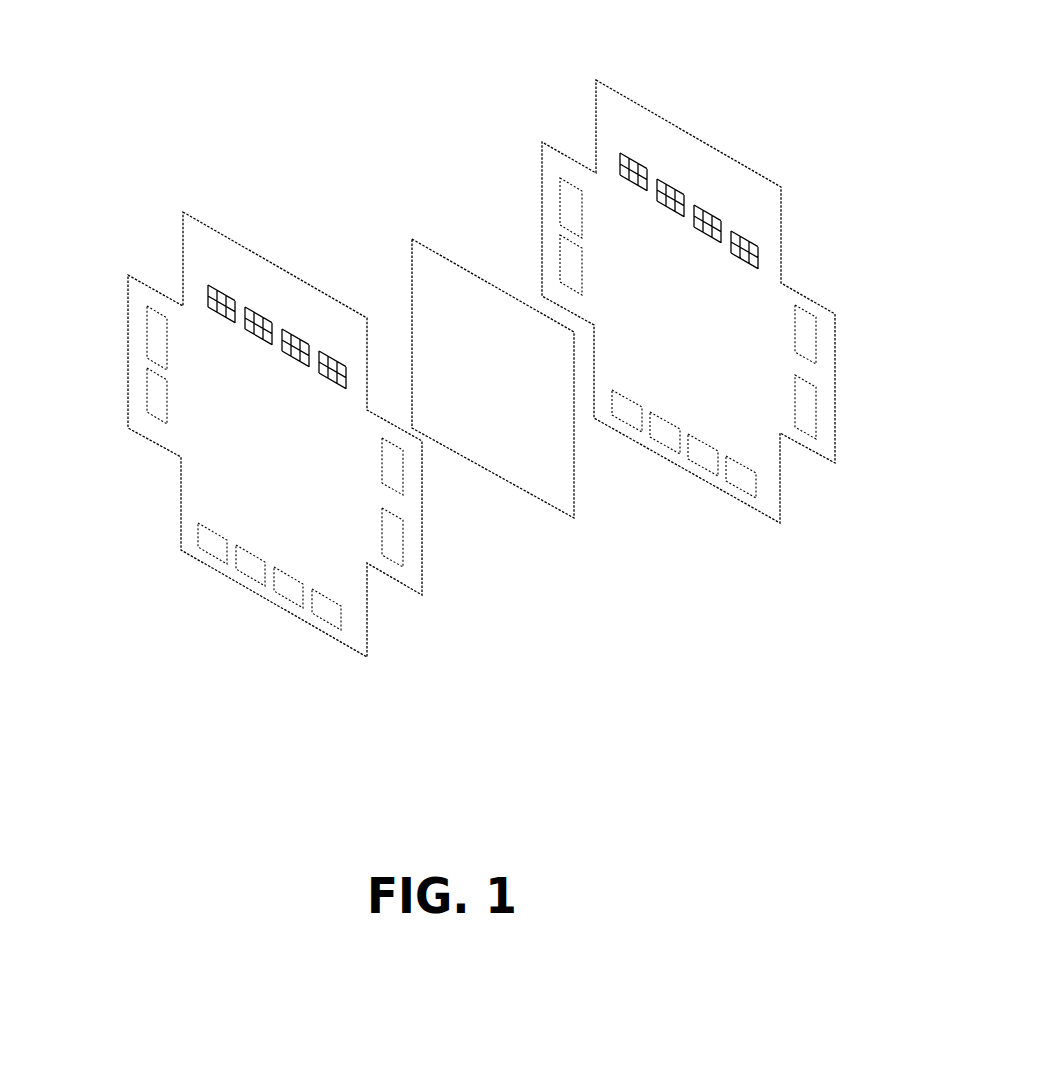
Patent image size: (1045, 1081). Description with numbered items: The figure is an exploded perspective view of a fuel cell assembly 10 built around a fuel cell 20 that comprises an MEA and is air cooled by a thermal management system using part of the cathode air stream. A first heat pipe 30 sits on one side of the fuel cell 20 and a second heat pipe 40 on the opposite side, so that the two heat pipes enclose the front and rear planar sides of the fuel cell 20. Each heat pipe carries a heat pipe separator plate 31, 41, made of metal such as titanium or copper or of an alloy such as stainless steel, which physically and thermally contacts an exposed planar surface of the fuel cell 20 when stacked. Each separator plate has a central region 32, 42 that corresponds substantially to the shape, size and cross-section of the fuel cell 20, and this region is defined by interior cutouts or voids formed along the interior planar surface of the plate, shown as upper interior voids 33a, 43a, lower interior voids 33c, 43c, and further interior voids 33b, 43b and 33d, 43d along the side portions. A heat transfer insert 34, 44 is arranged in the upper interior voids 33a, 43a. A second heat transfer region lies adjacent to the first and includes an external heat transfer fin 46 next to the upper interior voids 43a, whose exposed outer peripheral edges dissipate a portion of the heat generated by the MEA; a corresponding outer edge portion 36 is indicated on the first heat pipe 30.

The fuel cell assembly 10 is at (77, 97).
The fuel cell 20 is at (518, 462).
The first heat pipe 30 is at (367, 645).
The heat pipe separator plate 31 is at (198, 498).
The central region 32 is at (267, 453).
The upper interior voids 33a is at (296, 340).
The interior voids 33b is at (393, 463).
The lower interior voids 33c is at (288, 592).
The interior voids 33d is at (158, 337).
The heat transfer insert 34 is at (218, 302).
The edge portion of first circuit board 36 is at (213, 247).
The second heat pipe 40 is at (780, 508).
The heat pipe separator plate 41 is at (732, 290).
The central region 42 is at (695, 325).
The upper interior voids 43a is at (707, 210).
The interior voids 43b is at (805, 333).
The lower interior voids 43c is at (662, 433).
The interior voids 43d is at (570, 263).
The heat transfer insert 44 is at (630, 170).
The external heat transfer fin 46 is at (708, 174).